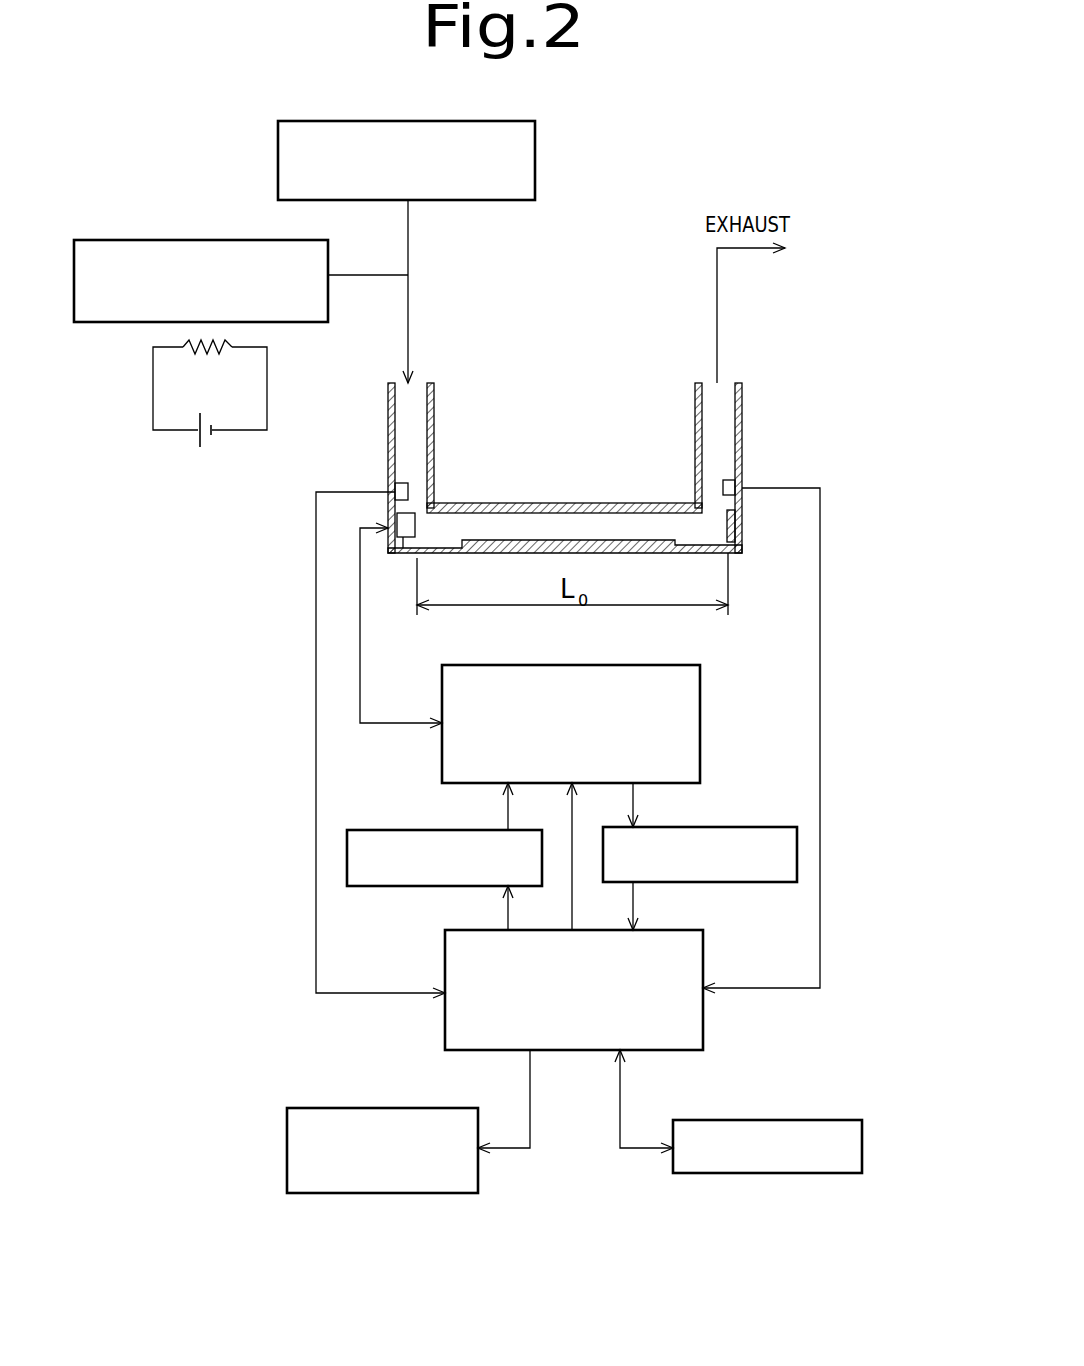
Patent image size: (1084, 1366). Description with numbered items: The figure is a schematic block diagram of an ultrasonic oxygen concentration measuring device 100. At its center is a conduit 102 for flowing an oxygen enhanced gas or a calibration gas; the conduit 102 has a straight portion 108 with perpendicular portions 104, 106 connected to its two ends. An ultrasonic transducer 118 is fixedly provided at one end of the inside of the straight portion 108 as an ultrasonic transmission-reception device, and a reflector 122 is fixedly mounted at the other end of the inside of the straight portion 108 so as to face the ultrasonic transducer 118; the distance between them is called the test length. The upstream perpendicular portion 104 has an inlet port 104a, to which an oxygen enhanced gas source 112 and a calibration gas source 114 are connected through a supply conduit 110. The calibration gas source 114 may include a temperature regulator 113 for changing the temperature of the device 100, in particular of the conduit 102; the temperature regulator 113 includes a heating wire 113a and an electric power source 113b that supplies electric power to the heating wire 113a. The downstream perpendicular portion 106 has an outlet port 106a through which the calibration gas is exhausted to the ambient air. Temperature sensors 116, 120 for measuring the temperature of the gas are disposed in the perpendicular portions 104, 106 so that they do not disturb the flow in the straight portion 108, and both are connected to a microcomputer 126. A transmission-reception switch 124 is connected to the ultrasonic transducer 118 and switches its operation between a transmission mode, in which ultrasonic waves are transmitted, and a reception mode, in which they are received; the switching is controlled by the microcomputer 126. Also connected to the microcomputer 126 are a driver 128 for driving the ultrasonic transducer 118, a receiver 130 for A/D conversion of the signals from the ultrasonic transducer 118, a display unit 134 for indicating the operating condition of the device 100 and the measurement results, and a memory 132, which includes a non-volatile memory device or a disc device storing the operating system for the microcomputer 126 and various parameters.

The ultrasonic oxygen concentration measuring device 100 is at (898, 238).
The conduit 102 is at (577, 495).
The perpendicular portion 104 is at (434, 402).
The inlet port 104a is at (405, 380).
The perpendicular portion 106 is at (695, 400).
The outlet port 106a is at (725, 380).
The straight portion 108 is at (647, 553).
The supply conduit 110 is at (408, 236).
The oxygen enhanced gas source 112 is at (535, 155).
The temperature regulator 113 is at (201, 438).
The heating wire 113a is at (218, 355).
The electric power source 113b is at (208, 450).
The calibration gas source 114 is at (200, 240).
The temperature sensor 116 is at (408, 490).
The ultrasonic transducer 118 is at (407, 557).
The temperature sensor 120 is at (723, 487).
The reflector 122 is at (747, 525).
The transmission-reception switch 124 is at (700, 697).
The microcomputer 126 is at (703, 1018).
The driver 128 is at (383, 830).
The receiver 130 is at (742, 827).
The memory 132 is at (762, 1173).
The display unit 134 is at (390, 1193).